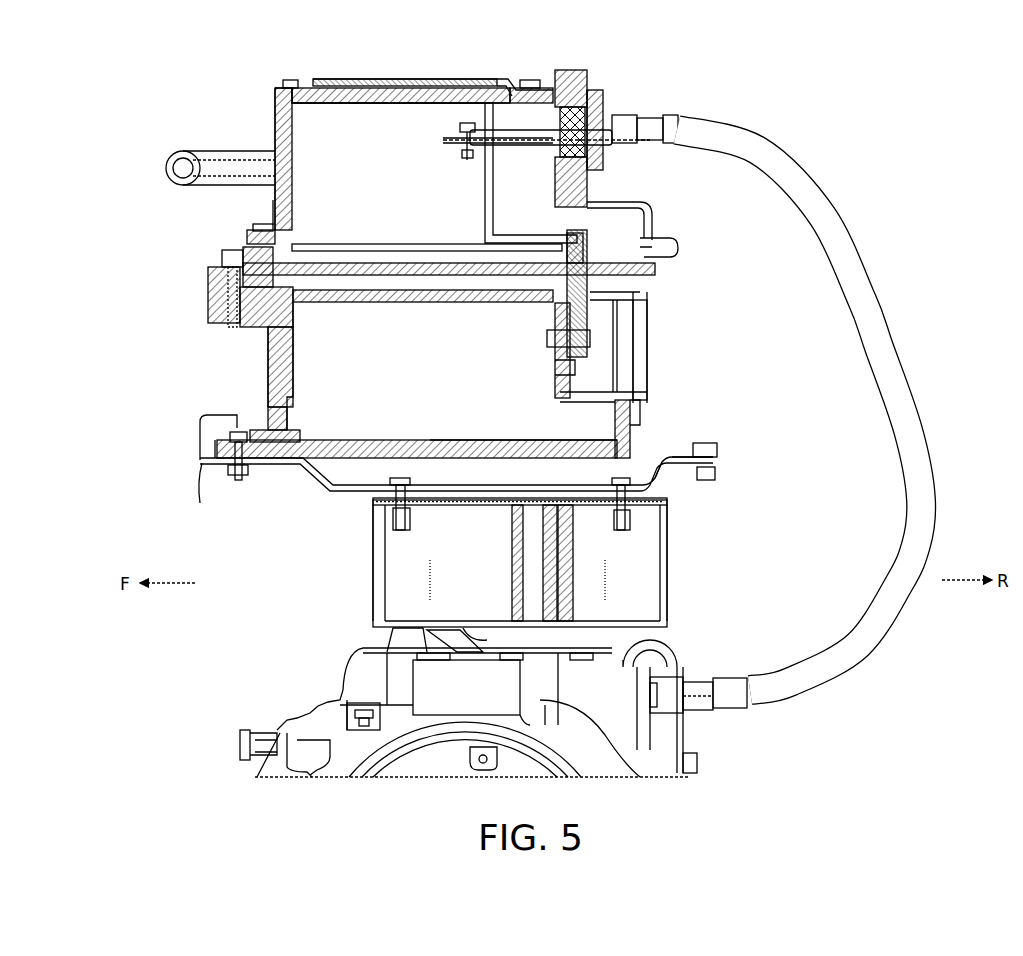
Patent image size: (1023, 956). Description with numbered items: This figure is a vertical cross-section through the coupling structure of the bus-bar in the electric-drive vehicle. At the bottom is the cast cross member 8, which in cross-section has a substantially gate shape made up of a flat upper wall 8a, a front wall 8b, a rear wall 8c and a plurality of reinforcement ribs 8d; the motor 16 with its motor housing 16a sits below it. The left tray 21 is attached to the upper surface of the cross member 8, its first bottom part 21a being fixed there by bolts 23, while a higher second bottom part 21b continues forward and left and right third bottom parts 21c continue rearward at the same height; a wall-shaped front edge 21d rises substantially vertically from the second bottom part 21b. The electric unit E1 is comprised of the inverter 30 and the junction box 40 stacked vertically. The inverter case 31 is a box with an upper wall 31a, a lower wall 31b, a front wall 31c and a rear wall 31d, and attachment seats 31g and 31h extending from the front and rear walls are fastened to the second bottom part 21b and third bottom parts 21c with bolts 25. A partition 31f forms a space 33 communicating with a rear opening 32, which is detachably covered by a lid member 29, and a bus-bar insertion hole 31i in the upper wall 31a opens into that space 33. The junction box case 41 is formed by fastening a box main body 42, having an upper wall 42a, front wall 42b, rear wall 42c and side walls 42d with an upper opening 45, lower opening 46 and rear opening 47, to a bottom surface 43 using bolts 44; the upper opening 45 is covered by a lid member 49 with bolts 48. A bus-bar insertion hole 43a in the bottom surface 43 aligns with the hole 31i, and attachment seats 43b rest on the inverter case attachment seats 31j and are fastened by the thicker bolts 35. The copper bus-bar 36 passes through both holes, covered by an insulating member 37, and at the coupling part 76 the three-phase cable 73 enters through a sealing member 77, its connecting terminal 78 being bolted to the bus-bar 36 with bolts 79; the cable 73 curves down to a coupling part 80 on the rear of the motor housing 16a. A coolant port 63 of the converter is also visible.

The cross member 8 is at (371, 555).
The upper wall 8a is at (475, 498).
The front wall 8b is at (373, 595).
The rear wall 8c is at (668, 560).
The reinforcement ribs 8d is at (545, 562).
The motor 16 is at (343, 670).
The motor housing 16a is at (642, 685).
The left tray 21 is at (318, 490).
The first bottom part 21a is at (520, 440).
The second bottom part 21b is at (200, 502).
The third bottom parts 21c is at (714, 463).
The front edge 21d is at (200, 440).
The bolts 23 is at (398, 478).
The bolts 25 is at (242, 432).
The lid member 29 is at (650, 330).
The inverter 30 is at (266, 378).
The inverter case 31 is at (266, 350).
The upper wall 31a is at (400, 302).
The lower wall 31b is at (440, 440).
The front wall 31c is at (294, 378).
The rear wall 31d is at (633, 410).
The partition 31f is at (555, 380).
The attachment seats 31g is at (215, 455).
The attachment seats 31h is at (665, 472).
The bus-bar insertion hole 31i is at (555, 320).
The attachment seats 31j is at (240, 305).
The rear opening 32 is at (648, 320).
The space 33 is at (620, 352).
The bolts 35 is at (222, 256).
The bus-bar 36 is at (485, 190).
The insulating member 37 is at (587, 300).
The junction box 40 is at (273, 120).
The junction box case 41 is at (272, 212).
The box main body 42 is at (654, 216).
The upper wall 42a is at (535, 88).
The front wall 42b is at (292, 166).
The rear wall 42c is at (555, 186).
The side walls 42d is at (405, 100).
The bottom surface 43 is at (658, 268).
The bus-bar insertion hole 43a is at (585, 252).
The attachment seats 43b is at (208, 280).
The bolts 44 is at (253, 228).
The upper opening 45 is at (356, 103).
The lower opening 46 is at (380, 244).
The rear opening 47 is at (555, 142).
The bolts 48 is at (290, 80).
The lid member 49 is at (455, 79).
The port 63 is at (189, 151).
The 3-phase cable 73 is at (876, 297).
The coupling part 76 is at (603, 112).
The sealing member 77 is at (590, 172).
The connecting terminals 78 is at (510, 88).
The bolts 79 is at (462, 127).
The coupling part 80 is at (684, 702).
The electric unit E1 is at (360, 78).